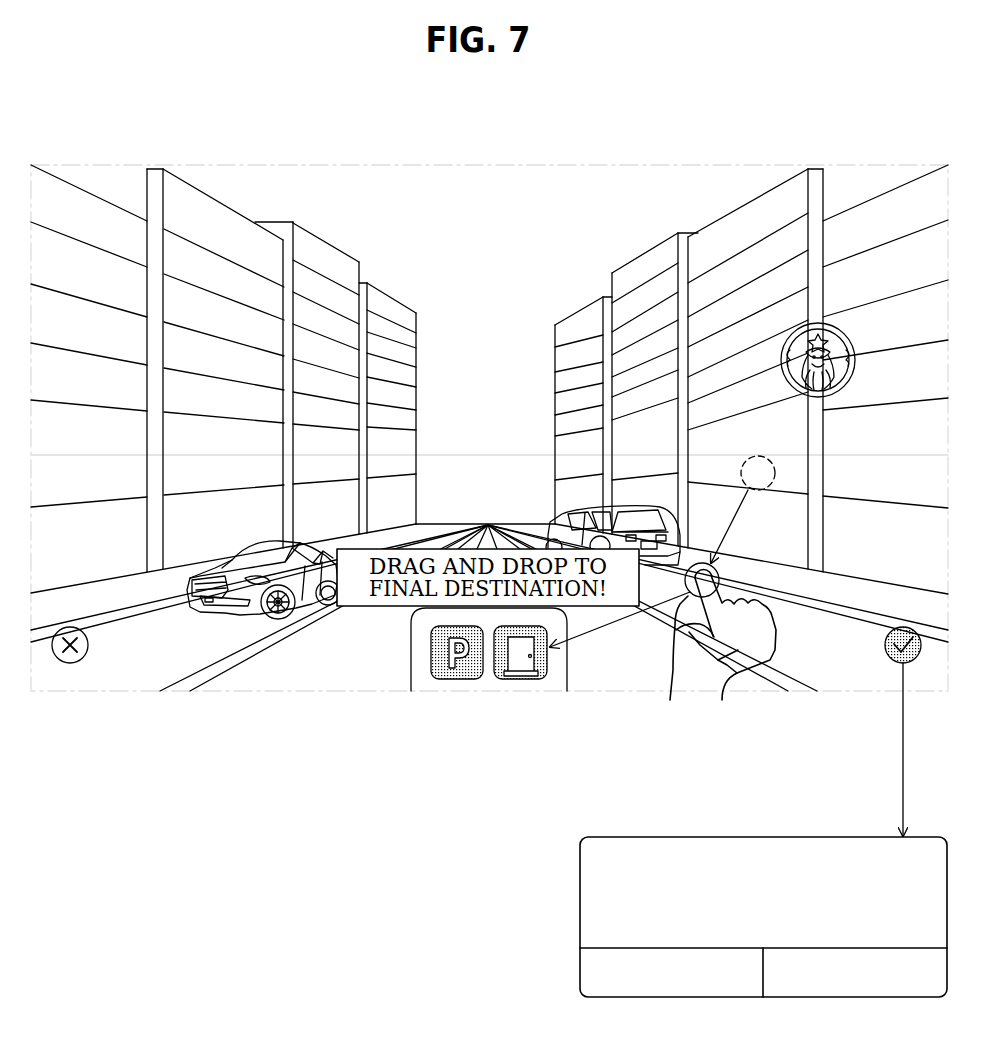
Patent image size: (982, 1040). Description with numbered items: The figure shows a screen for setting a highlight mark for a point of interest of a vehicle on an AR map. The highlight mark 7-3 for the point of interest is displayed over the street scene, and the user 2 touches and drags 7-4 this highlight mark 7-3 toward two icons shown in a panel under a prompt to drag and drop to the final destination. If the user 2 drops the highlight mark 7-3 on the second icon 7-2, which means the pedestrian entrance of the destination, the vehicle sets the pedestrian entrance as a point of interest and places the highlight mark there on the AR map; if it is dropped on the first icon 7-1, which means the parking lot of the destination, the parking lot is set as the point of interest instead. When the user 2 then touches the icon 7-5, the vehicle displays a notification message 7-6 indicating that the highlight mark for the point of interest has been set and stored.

The first icon 7-1 is at (442, 675).
The second icon 7-2 is at (528, 675).
The highlight mark 7-3 is at (745, 462).
The touch and drag 7-4 is at (670, 704).
The user 2 is at (724, 704).
The icon 7-5 is at (886, 658).
The notification message 7-6 is at (580, 862).